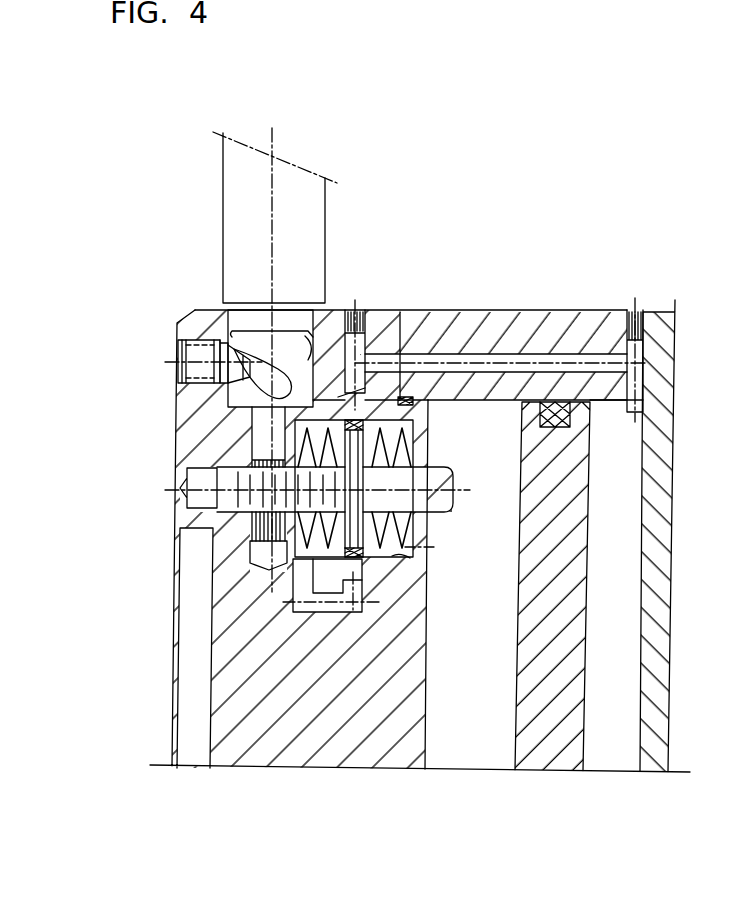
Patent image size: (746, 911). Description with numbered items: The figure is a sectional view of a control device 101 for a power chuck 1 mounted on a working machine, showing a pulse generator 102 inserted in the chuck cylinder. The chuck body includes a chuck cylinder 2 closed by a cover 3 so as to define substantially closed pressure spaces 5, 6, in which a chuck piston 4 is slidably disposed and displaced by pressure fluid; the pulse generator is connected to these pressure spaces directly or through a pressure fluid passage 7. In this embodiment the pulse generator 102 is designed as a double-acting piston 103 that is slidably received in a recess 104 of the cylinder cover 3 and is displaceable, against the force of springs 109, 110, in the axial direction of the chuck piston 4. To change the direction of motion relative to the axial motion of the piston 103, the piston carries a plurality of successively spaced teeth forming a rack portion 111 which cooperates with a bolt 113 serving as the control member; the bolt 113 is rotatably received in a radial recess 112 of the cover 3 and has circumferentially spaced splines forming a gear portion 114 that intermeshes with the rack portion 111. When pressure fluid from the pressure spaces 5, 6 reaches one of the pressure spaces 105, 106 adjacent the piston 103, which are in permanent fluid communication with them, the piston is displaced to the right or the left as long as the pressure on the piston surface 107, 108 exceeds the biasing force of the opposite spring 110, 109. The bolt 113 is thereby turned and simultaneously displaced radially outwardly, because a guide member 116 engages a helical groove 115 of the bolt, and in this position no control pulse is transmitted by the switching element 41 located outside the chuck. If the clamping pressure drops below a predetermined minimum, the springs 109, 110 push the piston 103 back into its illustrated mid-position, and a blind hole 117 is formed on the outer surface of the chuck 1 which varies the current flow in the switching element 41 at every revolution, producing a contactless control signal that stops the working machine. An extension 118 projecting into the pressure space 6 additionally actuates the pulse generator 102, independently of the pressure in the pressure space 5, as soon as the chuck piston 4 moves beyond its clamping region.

The power chuck 1 is at (473, 311).
The chuck cylinder 2 is at (530, 322).
The cover 3 is at (223, 560).
The chuck piston 4 is at (540, 746).
The pressure space 5 is at (605, 748).
The pressure space 6 is at (470, 748).
The pressure fluid passage 7 is at (567, 354).
The switching element 41 is at (224, 216).
The control device 101 is at (131, 369).
The pulse generator 102 is at (388, 578).
The double-acting piston 103 is at (400, 576).
The recess 104 is at (420, 550).
The pressure space 105 is at (410, 438).
The pressure space 106 is at (352, 578).
The piston surface 107 is at (380, 533).
The piston surface 108 is at (332, 548).
The spring 109 is at (408, 443).
The spring 110 is at (260, 567).
The rack portion 111 is at (247, 480).
The radial recess 112 is at (331, 312).
The bolt 113 is at (291, 347).
The gear portion 114 is at (257, 527).
The helical groove 115 is at (230, 393).
The guide member 116 is at (213, 347).
The blind hole 117 is at (247, 317).
The extension 118 is at (433, 500).